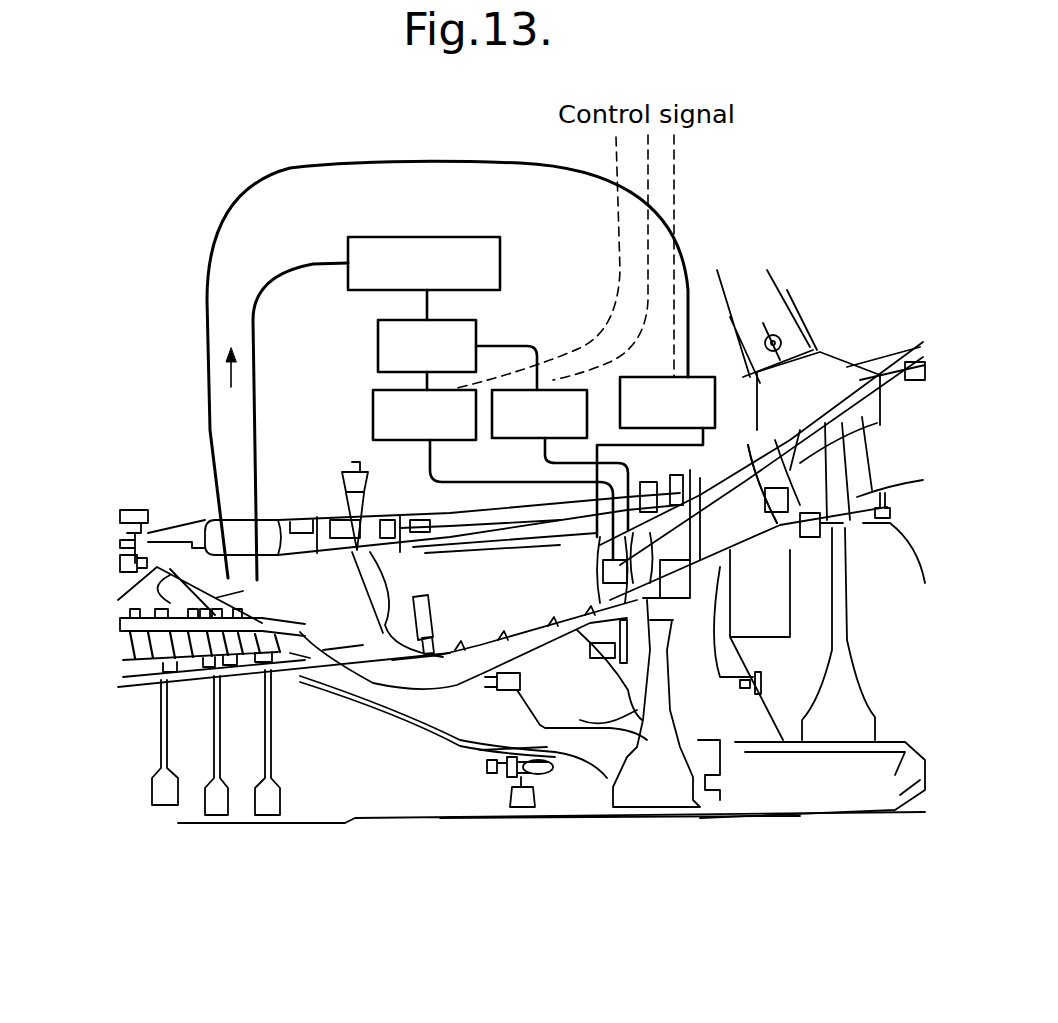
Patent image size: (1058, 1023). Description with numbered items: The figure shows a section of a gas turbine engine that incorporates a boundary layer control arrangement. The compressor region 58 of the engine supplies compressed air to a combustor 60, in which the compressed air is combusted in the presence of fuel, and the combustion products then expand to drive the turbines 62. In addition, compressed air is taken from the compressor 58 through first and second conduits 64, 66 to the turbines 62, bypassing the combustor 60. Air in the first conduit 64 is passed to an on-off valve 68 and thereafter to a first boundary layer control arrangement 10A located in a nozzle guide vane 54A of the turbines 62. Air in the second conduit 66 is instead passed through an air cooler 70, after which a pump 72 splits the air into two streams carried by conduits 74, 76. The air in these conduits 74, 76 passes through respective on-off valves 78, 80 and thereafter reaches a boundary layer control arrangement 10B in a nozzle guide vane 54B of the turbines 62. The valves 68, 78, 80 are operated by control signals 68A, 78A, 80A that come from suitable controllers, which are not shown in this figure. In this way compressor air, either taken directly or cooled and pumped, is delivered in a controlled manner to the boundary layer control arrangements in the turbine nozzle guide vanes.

The first boundary layer control arrangement 10A is at (778, 497).
The boundary layer control arrangement 10B is at (618, 571).
The nozzle guide vane 54A is at (785, 470).
The nozzle guide vane 54B is at (600, 557).
The compressor region 58 is at (116, 632).
The combustor 60 is at (453, 617).
The turbines 62 is at (690, 706).
The first conduit 64 is at (228, 195).
The second conduit 66 is at (256, 384).
The on-off valve 68 is at (713, 428).
The control signal 68A is at (676, 199).
The air cooler 70 is at (421, 237).
The pump 72 is at (478, 323).
The conduit 74 is at (522, 344).
The conduit 76 is at (420, 382).
The on-off valve 78 is at (525, 443).
The control signal 78A is at (650, 158).
The on-off valve 80 is at (372, 421).
The control signal 80A is at (620, 216).